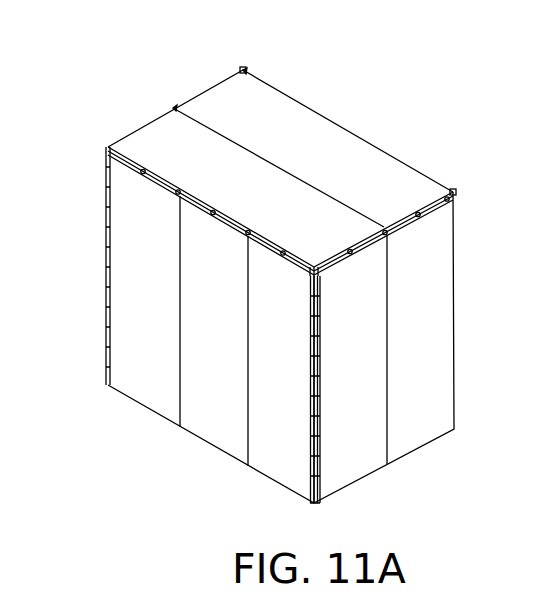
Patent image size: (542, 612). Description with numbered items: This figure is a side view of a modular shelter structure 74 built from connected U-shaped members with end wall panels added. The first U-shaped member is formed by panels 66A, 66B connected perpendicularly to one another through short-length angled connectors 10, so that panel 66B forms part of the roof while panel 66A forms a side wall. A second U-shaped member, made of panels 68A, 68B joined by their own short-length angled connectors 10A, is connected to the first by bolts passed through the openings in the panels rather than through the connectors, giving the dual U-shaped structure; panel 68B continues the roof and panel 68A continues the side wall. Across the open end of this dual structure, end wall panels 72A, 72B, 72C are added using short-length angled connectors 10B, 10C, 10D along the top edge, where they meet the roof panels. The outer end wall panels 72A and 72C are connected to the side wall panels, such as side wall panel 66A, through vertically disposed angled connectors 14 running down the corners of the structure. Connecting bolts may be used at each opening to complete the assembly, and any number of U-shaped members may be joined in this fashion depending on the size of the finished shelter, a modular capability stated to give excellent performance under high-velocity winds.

The collapsible enclosure 74 is at (453, 103).
The short-length angled connector 10 is at (108, 147).
The short-length angled connector 10A is at (244, 70).
The short-length angled connector 10B is at (141, 173).
The short-length angled connector 10C is at (217, 217).
The short-length angled connector 10D is at (270, 249).
The vertically disposed angled connector 14 is at (106, 236).
The panel 66A is at (343, 441).
The panel 66B is at (147, 133).
The panel 68A is at (411, 409).
The panel 68B is at (389, 170).
The end wall panel 72A is at (148, 378).
The end wall panel 72B is at (207, 406).
The end wall panel 72C is at (270, 449).